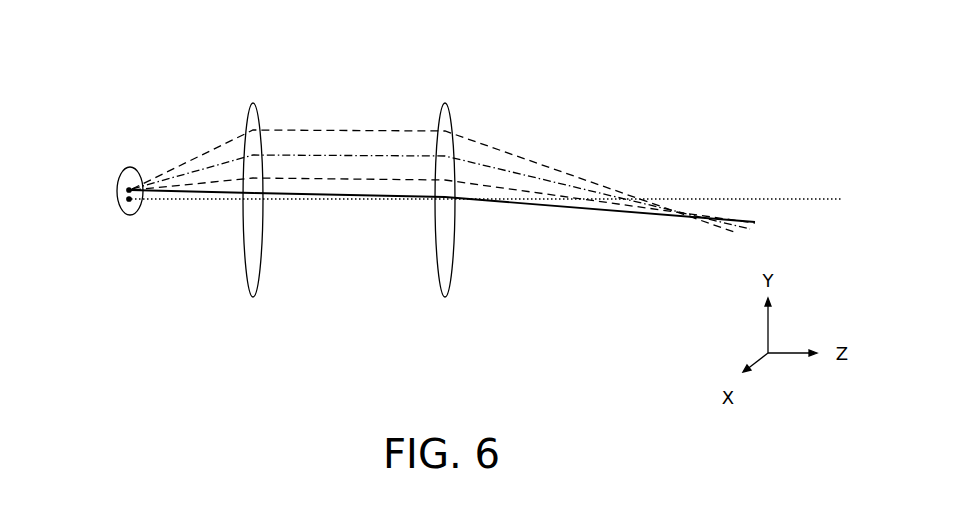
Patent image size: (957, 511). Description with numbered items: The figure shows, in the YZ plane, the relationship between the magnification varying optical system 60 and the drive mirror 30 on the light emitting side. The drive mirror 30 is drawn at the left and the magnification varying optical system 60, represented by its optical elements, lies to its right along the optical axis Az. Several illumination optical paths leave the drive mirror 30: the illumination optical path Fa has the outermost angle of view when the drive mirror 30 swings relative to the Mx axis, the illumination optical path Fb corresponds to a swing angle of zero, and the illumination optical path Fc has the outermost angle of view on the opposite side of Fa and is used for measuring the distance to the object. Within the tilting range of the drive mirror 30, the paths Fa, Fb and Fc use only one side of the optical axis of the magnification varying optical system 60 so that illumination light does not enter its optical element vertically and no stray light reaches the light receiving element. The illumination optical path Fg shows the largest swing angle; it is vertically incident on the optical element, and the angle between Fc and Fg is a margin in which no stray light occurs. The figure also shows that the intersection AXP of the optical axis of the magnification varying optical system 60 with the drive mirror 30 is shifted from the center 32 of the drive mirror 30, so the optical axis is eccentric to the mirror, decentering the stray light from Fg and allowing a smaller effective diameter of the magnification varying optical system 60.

The drive mirror 30 is at (130, 215).
The center of the drive mirror 32 is at (118, 176).
The intersection of the optical axis with the drive mirror AXP is at (132, 201).
The magnification varying optical system 60 is at (466, 77).
The illumination optical path Fa is at (242, 131).
The illumination optical path Fb is at (229, 158).
The illumination optical path Fc is at (221, 182).
The illumination optical path Fg is at (287, 196).
The optical axis Az is at (795, 200).